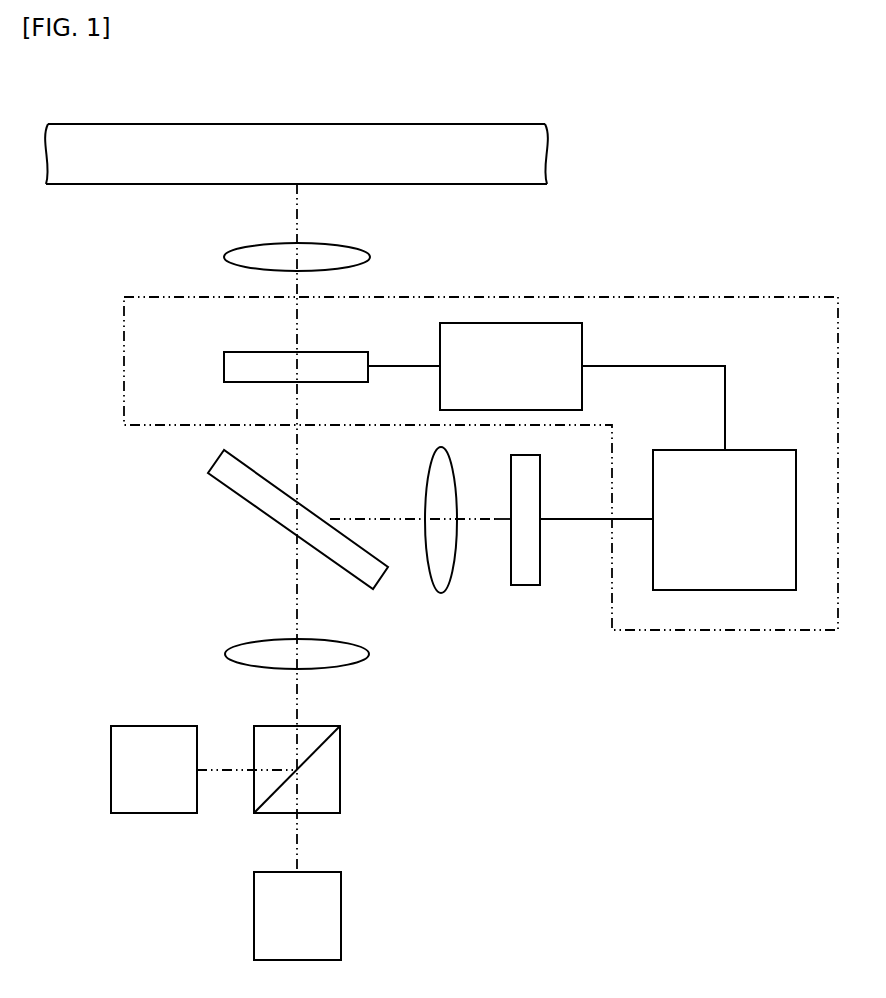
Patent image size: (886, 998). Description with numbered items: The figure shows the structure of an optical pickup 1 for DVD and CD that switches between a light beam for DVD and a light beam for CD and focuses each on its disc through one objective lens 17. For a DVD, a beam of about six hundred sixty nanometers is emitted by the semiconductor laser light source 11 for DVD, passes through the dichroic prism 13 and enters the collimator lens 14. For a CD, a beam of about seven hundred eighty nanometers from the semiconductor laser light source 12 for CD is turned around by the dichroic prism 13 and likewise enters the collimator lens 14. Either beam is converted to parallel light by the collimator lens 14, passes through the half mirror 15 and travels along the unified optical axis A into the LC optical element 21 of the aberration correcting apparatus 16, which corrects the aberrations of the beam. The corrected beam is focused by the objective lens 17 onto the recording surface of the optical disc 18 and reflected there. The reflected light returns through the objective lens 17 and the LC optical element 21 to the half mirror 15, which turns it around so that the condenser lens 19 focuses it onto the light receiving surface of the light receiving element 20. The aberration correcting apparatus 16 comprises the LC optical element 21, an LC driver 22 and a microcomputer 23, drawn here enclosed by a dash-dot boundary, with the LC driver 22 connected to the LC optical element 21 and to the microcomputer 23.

The optical pickup 1 is at (518, 841).
The semiconductor laser light source for DVD 11 is at (341, 918).
The semiconductor laser light source for CD 12 is at (111, 797).
The dichroic prism 13 is at (340, 785).
The collimator lens 14 is at (360, 664).
The half mirror 15 is at (232, 489).
The aberration correcting apparatus 16 is at (124, 366).
The objective lens 17 is at (370, 257).
The optical disc 18 is at (505, 184).
The condenser lens 19 is at (445, 585).
The light receiving element 20 is at (540, 568).
The LC optical element 21 is at (224, 368).
The LC driver 22 is at (582, 330).
The microcomputer 23 is at (796, 450).
The unified optical axis A is at (297, 457).